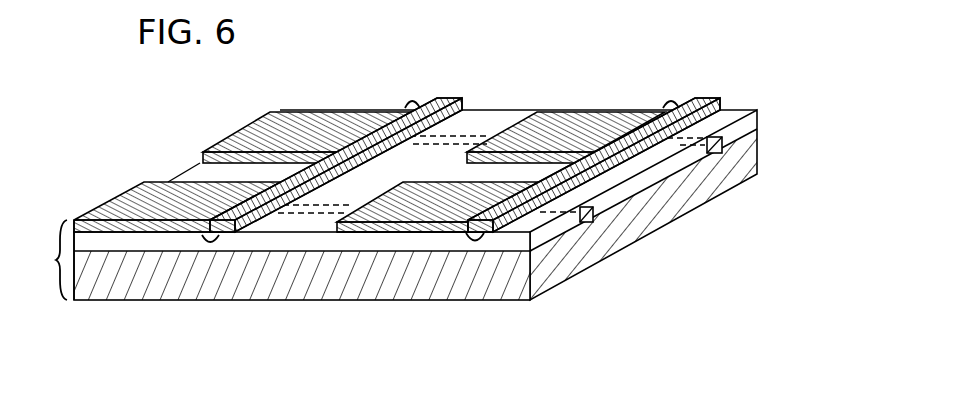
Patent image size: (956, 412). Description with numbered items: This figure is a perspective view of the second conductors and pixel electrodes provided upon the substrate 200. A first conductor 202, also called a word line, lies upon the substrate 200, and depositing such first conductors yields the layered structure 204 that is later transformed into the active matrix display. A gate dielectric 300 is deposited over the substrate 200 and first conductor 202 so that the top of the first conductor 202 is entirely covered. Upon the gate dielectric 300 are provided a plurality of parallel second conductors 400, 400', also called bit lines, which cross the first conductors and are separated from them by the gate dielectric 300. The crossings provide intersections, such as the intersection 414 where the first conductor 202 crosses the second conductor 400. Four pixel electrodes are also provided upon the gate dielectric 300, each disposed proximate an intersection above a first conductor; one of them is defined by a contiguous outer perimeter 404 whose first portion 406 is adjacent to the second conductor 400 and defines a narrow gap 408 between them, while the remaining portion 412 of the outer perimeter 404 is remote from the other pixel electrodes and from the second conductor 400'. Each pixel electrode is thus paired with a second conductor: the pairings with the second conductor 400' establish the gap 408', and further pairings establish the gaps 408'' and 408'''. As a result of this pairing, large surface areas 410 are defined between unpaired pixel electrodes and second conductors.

The substrate 200 is at (753, 177).
The first conductor 202 is at (590, 212).
The layered structure 204 is at (43, 260).
The gate dielectric 300 is at (742, 127).
The second conductor 400 is at (629, 140).
The second conductor 400' is at (373, 140).
The outer perimeter 404 is at (433, 228).
The first portion of outer perimeter 406 is at (487, 200).
The gap 408 is at (490, 296).
The gap 408' is at (433, 72).
The gap 408'' is at (226, 297).
The gap 408''' is at (698, 73).
The large surface area 410 is at (201, 163).
The remaining portion of outer perimeter 412 is at (383, 203).
The intersection 414 is at (540, 208).